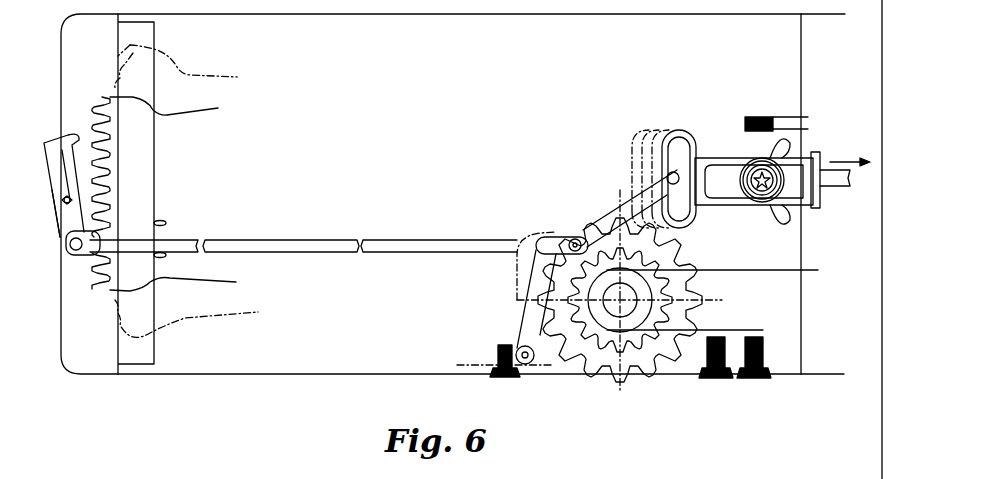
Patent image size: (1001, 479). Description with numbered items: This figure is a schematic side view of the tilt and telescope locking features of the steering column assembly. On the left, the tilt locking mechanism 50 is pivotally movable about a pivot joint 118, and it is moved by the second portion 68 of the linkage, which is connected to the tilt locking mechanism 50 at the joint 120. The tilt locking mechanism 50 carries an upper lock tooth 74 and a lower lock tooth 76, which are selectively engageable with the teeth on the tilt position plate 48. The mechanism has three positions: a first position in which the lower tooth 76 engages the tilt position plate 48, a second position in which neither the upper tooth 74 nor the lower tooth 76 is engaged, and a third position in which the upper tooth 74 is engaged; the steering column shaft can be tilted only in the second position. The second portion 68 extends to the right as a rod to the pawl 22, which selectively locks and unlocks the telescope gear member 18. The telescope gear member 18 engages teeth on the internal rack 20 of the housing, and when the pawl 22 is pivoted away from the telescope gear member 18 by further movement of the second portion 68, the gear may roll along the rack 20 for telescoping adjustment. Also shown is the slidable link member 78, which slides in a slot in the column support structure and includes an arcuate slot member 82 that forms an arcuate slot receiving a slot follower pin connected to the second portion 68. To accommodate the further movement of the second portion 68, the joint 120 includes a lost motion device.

The telescope gear member 18 is at (597, 328).
The internal rack 20 is at (632, 375).
The pawl 22 is at (540, 279).
The tilt position plate 48 is at (97, 170).
The tilt locking mechanism 50 is at (52, 190).
The second portion of the linkage 68 is at (181, 254).
The upper lock tooth 74 is at (78, 136).
The lower lock tooth 76 is at (75, 232).
The slidable link member 78 is at (729, 134).
The arcuate slot member 82 is at (679, 124).
The pivot joint 118 is at (62, 207).
The joint 120 is at (63, 252).